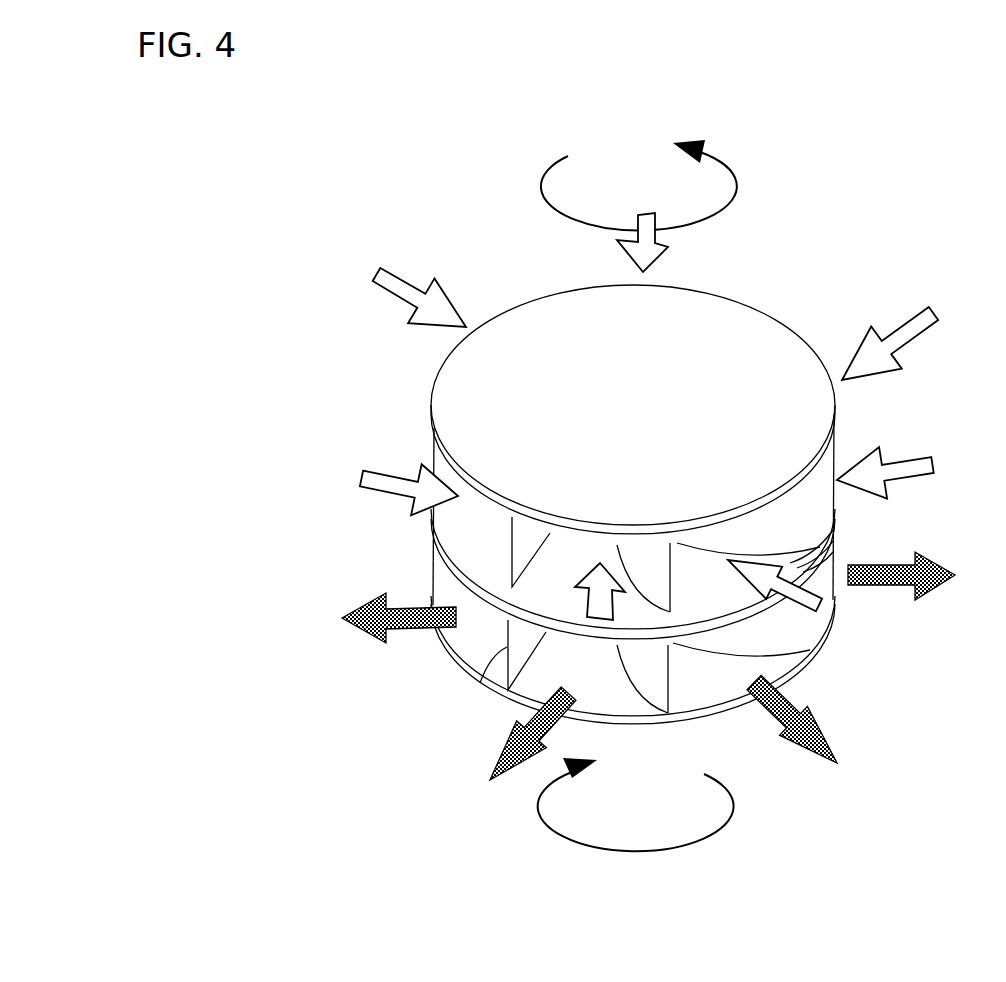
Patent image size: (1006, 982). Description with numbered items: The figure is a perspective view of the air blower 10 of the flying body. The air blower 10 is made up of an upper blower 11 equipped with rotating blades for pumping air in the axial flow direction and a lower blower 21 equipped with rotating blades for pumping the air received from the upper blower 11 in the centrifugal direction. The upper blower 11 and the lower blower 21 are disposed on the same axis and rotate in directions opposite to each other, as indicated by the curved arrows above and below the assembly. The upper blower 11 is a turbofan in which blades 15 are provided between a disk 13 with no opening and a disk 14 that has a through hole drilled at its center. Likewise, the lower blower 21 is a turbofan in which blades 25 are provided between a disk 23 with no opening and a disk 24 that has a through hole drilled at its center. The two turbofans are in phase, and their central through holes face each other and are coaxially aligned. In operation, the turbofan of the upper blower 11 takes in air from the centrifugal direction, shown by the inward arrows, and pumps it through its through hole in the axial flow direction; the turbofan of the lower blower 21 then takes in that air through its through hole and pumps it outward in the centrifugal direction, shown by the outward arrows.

The air blower 10 is at (644, 455).
The upper blower 11 is at (410, 395).
The disk with no opening 13 is at (750, 335).
The disk having a through hole 14 is at (447, 546).
The blades 15 is at (808, 503).
The lower blower 21 is at (447, 645).
The disk with no opening 23 is at (763, 618).
The disk having a through hole 24 is at (793, 673).
The blades 25 is at (507, 647).